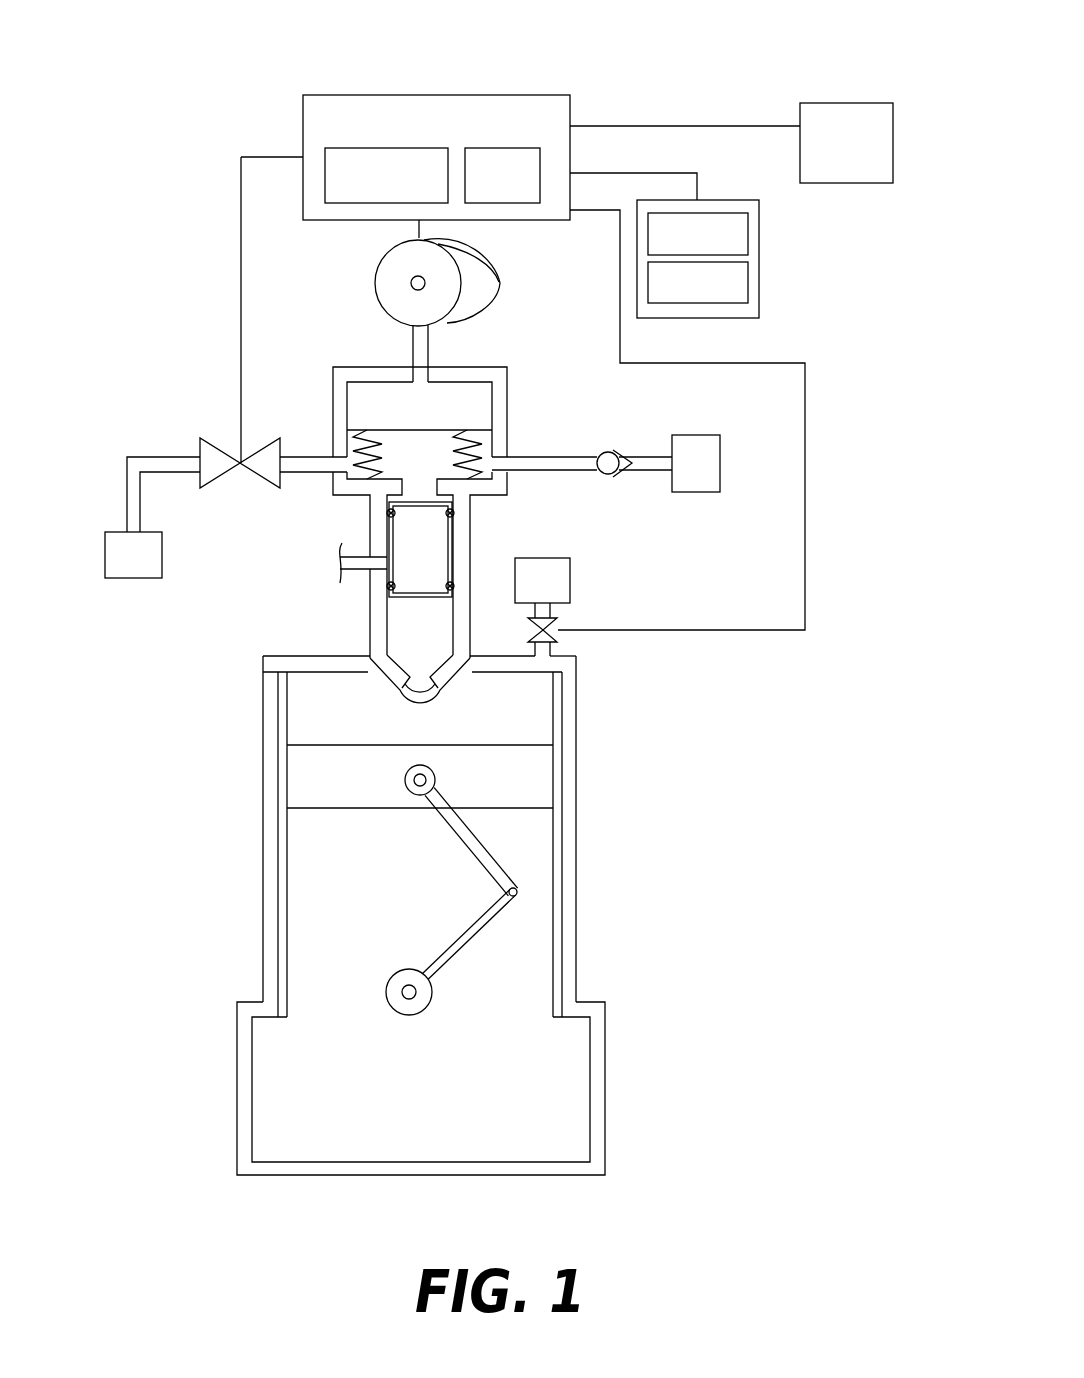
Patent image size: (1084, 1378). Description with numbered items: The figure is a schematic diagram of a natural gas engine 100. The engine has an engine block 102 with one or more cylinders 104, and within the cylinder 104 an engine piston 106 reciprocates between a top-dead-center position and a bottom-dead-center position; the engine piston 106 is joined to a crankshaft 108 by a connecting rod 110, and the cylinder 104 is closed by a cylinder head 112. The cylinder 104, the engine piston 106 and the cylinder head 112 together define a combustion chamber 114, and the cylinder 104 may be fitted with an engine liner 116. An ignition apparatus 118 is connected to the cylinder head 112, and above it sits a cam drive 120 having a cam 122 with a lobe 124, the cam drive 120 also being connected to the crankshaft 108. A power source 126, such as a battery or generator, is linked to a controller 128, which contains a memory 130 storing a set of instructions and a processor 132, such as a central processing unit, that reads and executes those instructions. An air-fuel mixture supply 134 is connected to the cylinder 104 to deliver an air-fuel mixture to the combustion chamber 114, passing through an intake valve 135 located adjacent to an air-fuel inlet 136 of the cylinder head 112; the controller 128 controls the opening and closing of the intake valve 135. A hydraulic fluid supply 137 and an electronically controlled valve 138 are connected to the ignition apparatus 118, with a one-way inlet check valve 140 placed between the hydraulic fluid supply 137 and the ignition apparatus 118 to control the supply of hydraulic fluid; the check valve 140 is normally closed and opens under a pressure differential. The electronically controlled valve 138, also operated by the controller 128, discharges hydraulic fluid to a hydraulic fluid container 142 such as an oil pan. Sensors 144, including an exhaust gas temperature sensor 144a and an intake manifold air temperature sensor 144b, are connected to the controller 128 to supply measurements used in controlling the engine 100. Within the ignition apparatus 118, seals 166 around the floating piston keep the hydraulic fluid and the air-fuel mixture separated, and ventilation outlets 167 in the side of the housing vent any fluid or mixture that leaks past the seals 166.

The natural gas engine 100 is at (699, 43).
The engine block 102 is at (605, 1012).
The cylinder 104 is at (263, 731).
The engine piston 106 is at (542, 768).
The crankshaft 108 is at (389, 973).
The connecting rod 110 is at (460, 838).
The cylinder head 112 is at (318, 655).
The combustion chamber 114 is at (540, 705).
The engine liner 116 is at (287, 708).
The ignition apparatus 118 is at (513, 539).
The cam drive 120 is at (440, 305).
The cam 122 is at (426, 236).
The lobe 124 is at (500, 280).
The power source 126 is at (832, 157).
The controller 128 is at (352, 95).
The memory 130 is at (302, 148).
The processor 132 is at (540, 157).
The air-fuel mixture supply 134 is at (570, 577).
The intake valve 135 is at (530, 628).
The air-fuel inlet 136 is at (543, 657).
The hydraulic fluid supply 137 is at (720, 458).
The electronically controlled valve 138 is at (213, 442).
The one-way inlet check valve 140 is at (618, 450).
The hydraulic fluid container 142 is at (122, 580).
The sensors 144 is at (747, 259).
The exhaust gas temperature sensor 144a is at (677, 248).
The intake manifold air temperature sensor 144b is at (677, 296).
The seals 166 is at (455, 513).
The ventilation outlets 167 is at (357, 552).